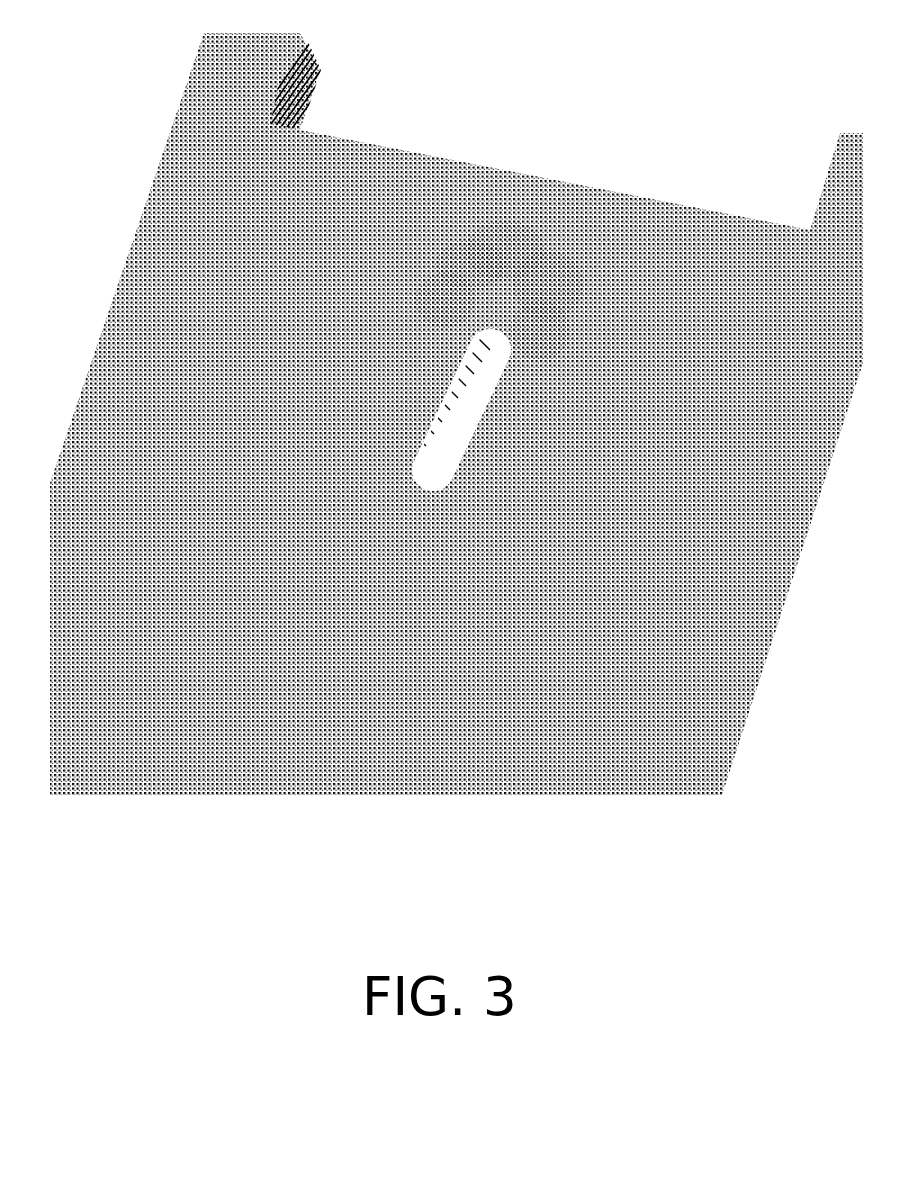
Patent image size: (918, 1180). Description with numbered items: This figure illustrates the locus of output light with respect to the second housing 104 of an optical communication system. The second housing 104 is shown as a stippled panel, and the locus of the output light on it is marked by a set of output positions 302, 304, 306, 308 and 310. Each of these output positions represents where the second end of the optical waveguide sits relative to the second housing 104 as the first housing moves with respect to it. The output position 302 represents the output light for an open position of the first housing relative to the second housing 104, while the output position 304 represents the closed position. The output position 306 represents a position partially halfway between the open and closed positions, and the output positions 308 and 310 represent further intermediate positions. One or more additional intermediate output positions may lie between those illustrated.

The second housing 104 is at (140, 285).
The output position 302 is at (428, 320).
The output position 304 is at (560, 340).
The output position 306 is at (510, 232).
The output position 308 is at (468, 266).
The output position 310 is at (556, 281).